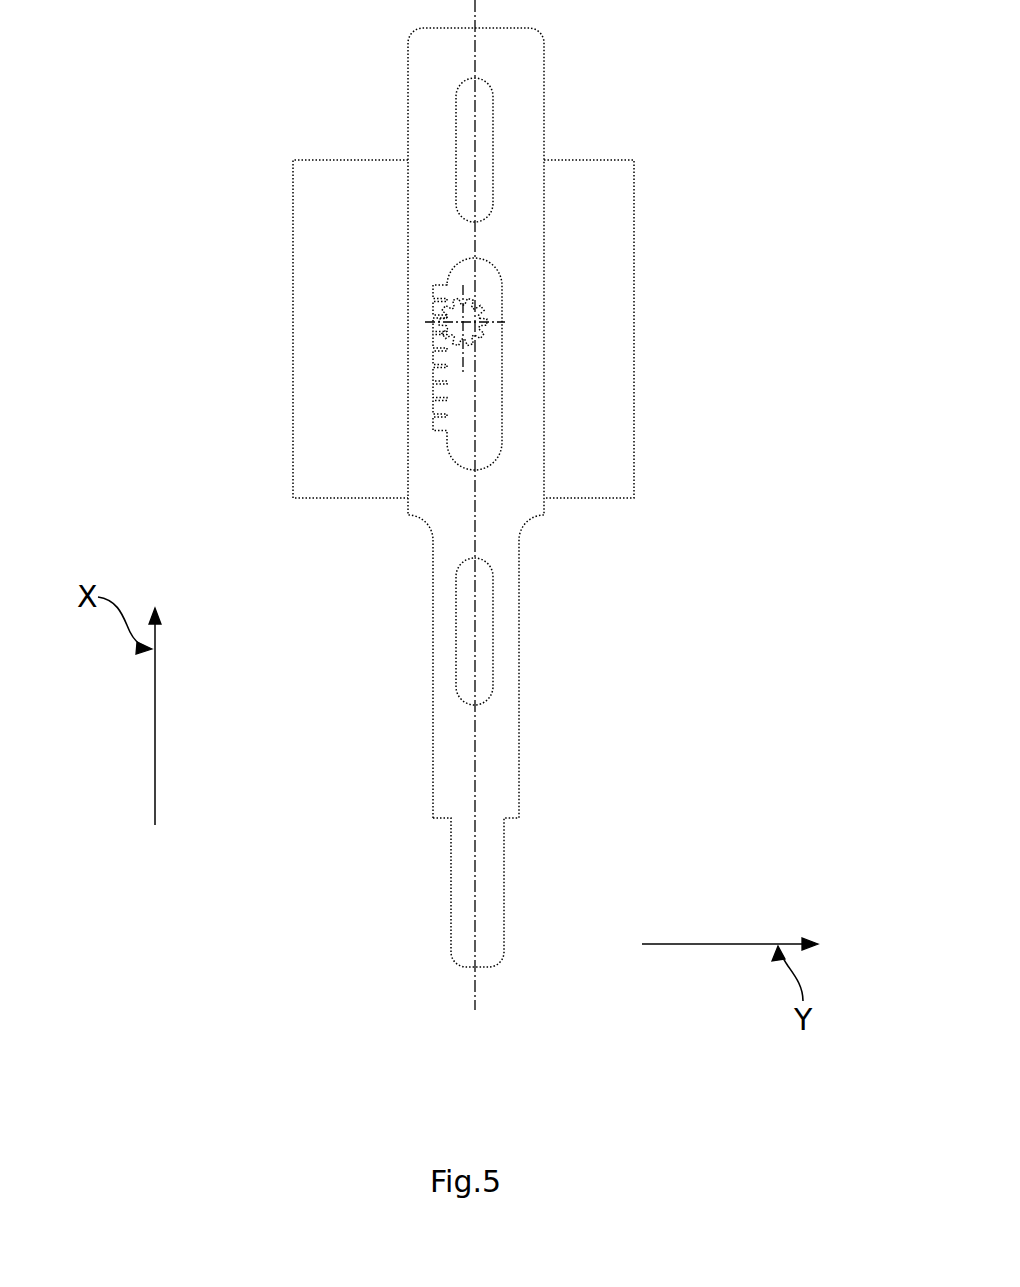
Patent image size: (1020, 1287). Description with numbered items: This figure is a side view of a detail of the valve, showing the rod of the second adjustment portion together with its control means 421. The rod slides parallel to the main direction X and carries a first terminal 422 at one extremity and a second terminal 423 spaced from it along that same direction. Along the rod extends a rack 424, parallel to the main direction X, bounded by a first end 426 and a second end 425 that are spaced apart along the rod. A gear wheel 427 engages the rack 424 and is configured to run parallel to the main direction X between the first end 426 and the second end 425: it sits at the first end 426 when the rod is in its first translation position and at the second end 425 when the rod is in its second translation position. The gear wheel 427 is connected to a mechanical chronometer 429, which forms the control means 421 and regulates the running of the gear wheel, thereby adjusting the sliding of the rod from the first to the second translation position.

The control means 421 is at (260, 172).
The first terminal 422 is at (420, 60).
The second terminal 423 is at (462, 933).
The rack 424 is at (433, 380).
The second end 425 is at (470, 444).
The first end 426 is at (472, 272).
The gear wheel 427 is at (475, 322).
The mechanical chronometer 429 is at (300, 297).